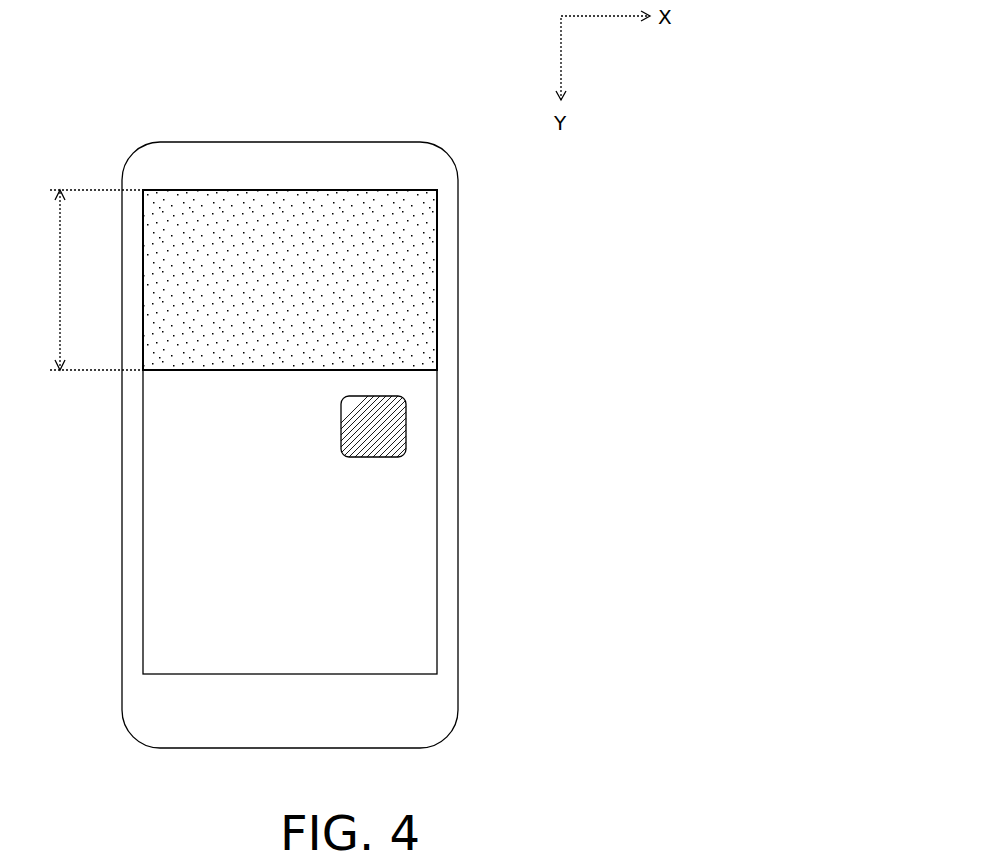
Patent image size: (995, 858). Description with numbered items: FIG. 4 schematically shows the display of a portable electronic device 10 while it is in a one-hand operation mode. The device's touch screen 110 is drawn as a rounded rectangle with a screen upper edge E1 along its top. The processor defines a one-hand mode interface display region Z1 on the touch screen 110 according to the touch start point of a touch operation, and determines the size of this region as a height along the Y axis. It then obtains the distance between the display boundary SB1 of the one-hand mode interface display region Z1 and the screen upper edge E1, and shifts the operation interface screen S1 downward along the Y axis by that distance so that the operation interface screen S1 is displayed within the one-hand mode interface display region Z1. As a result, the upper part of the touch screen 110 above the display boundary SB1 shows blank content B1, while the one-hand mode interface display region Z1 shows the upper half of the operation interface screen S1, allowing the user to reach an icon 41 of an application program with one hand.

The portable electronic device 10 is at (261, 142).
The touch screen 110 is at (351, 190).
The screen upper edge E1 is at (193, 190).
The blank content B1 is at (400, 250).
The display boundary SB1 is at (185, 372).
The icon 41 is at (406, 424).
The one-hand mode interface display region Z1 is at (440, 489).
The operation interface screen S1 is at (378, 548).